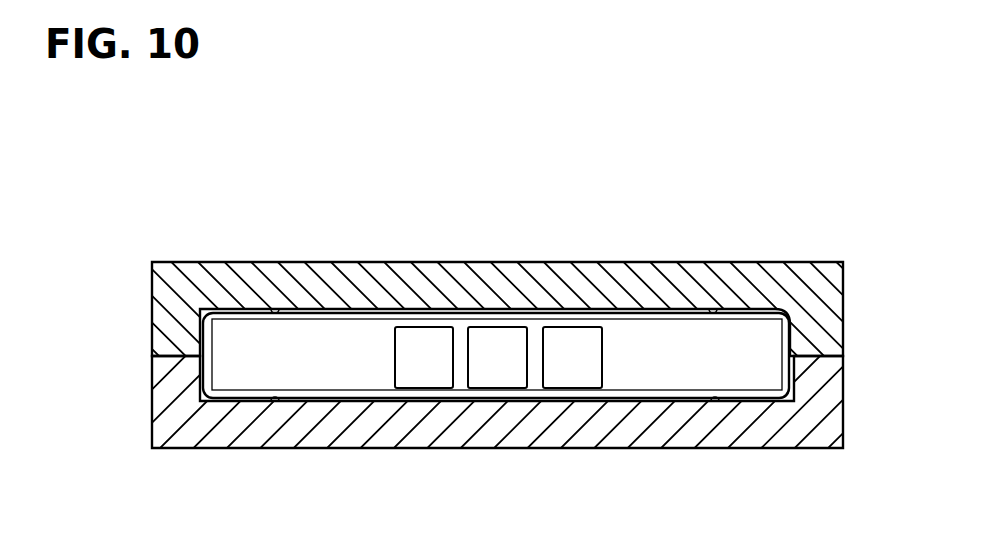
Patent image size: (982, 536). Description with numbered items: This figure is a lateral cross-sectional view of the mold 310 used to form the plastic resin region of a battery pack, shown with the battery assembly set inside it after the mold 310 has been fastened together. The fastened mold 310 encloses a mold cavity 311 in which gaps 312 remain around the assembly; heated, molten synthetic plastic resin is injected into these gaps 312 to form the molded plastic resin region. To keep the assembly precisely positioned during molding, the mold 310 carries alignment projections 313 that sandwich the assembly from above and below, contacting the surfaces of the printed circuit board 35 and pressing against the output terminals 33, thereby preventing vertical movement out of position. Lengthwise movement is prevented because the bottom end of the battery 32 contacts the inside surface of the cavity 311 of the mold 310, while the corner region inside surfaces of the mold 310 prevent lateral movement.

The mold 310 is at (452, 275).
The mold cavity 311 is at (643, 298).
The gaps 312 is at (226, 326).
The alignment projections 313 is at (275, 308).
The battery 32 is at (786, 400).
The output terminals 33 is at (418, 342).
The printed circuit board 35 is at (350, 375).